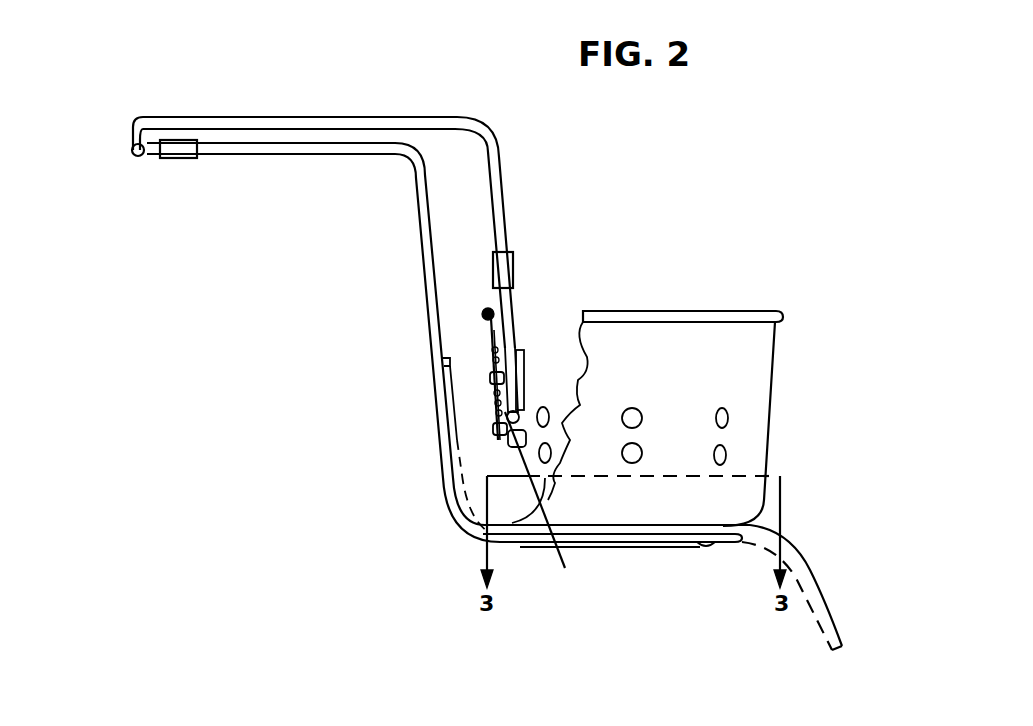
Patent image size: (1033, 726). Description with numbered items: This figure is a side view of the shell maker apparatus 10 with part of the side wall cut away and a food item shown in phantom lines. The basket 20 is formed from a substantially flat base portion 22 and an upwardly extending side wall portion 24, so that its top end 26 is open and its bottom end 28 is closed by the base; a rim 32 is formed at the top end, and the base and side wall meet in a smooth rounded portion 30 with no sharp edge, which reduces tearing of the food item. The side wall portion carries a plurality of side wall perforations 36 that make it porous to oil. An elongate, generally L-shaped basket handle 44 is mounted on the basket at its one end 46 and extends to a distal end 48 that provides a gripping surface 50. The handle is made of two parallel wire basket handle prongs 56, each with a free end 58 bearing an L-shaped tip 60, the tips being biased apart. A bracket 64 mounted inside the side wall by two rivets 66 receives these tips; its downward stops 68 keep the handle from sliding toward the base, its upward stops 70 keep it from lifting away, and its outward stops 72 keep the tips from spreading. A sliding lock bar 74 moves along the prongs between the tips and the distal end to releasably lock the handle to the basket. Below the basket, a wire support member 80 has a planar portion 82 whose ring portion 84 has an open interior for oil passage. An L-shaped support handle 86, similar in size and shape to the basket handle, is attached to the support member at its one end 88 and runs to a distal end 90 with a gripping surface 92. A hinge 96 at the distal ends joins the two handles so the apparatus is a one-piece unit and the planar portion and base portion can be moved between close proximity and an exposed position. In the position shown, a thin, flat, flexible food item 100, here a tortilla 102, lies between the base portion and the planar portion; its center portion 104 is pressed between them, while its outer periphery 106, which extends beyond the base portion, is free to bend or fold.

The shell maker apparatus 10 is at (677, 163).
The basket 20 is at (687, 373).
The base portion 22 is at (682, 528).
The side wall portion 24 is at (750, 356).
The top end 26 is at (746, 311).
The bottom end 28 is at (766, 484).
The rounded portion 30 is at (492, 527).
The rim 32 is at (786, 318).
The side wall perforations 36 is at (730, 418).
The basket handle 44 is at (318, 203).
The end of the basket handle 46 is at (526, 350).
The distal end of the basket handle 48 is at (142, 116).
The gripping surface 50 is at (258, 117).
The basket handle prongs 56 is at (500, 192).
The free end 58 is at (541, 506).
The L-shaped tips 60 is at (503, 402).
The bracket 64 is at (500, 345).
The rivets 66 is at (495, 378).
The downward stops 68 is at (528, 437).
The upward stops 70 is at (555, 408).
The outward stops 72 is at (600, 312).
The sliding lock bar 74 is at (516, 258).
The support member 80 is at (722, 553).
The planar portion 82 is at (515, 544).
The ring portion 84 is at (636, 544).
The support handle 86 is at (306, 160).
The end of the support handle 88 is at (446, 458).
The distal end of the support handle 90 is at (142, 156).
The gripping surface 92 is at (230, 158).
The hinge 96 is at (170, 160).
The food item 100 is at (806, 562).
The tortilla 102 is at (830, 591).
The center portion 104 is at (593, 536).
The outer periphery 106 is at (836, 632).